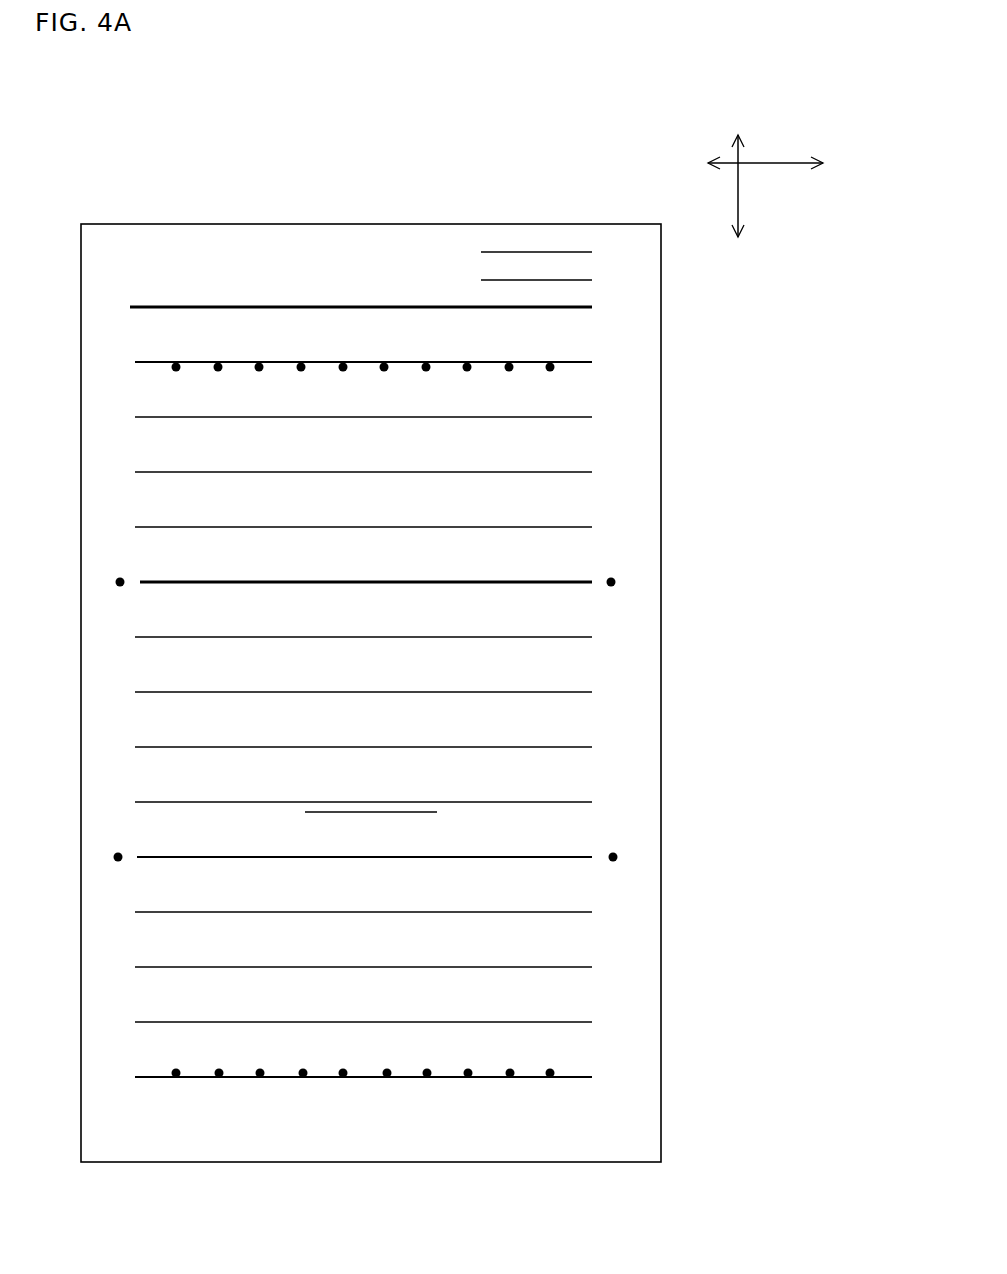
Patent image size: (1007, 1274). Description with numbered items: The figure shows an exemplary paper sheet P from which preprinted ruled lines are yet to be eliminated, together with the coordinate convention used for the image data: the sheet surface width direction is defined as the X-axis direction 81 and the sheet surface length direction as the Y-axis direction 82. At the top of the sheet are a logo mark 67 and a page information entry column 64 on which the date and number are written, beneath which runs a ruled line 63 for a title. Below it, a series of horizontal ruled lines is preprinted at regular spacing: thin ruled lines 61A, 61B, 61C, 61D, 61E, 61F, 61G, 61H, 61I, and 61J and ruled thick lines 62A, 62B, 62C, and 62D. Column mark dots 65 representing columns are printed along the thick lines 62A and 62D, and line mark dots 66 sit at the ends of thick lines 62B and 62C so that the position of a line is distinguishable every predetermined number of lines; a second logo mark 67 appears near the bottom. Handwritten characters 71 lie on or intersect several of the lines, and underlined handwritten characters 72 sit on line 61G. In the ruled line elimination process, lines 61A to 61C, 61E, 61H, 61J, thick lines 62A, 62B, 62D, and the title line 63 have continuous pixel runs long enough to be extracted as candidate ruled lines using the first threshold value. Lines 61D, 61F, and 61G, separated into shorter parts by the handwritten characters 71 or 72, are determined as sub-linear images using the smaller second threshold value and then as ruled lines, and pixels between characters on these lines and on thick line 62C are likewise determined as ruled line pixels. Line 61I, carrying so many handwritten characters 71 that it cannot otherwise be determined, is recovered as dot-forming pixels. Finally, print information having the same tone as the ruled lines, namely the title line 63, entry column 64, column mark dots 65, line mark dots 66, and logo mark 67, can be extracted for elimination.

The paper sheet P is at (301, 206).
The ruled line for a title 63 is at (150, 307).
The ruled thick line 62A is at (150, 362).
The ruled line 61A is at (150, 417).
The ruled line 61B is at (152, 472).
The ruled line 61C is at (152, 527).
The ruled thick line 62B is at (152, 582).
The ruled line 61D is at (152, 637).
The ruled line 61E is at (152, 692).
The ruled line 61F is at (152, 747).
The ruled line 61G is at (152, 802).
The ruled thick line 62C is at (152, 857).
The ruled line 61H is at (152, 912).
The ruled line 61I is at (152, 967).
The ruled line 61J is at (152, 1022).
The ruled thick line 62D is at (152, 1077).
The page information entry column 64 is at (500, 217).
The column mark dots 65 is at (181, 1178).
The line mark dots 66 is at (617, 583).
The logo mark 67 is at (131, 219).
The handwritten characters 71 is at (270, 396).
The handwritten characters 72 is at (445, 812).
The X-axis direction 81 is at (756, 163).
The Y-axis direction 82 is at (738, 188).